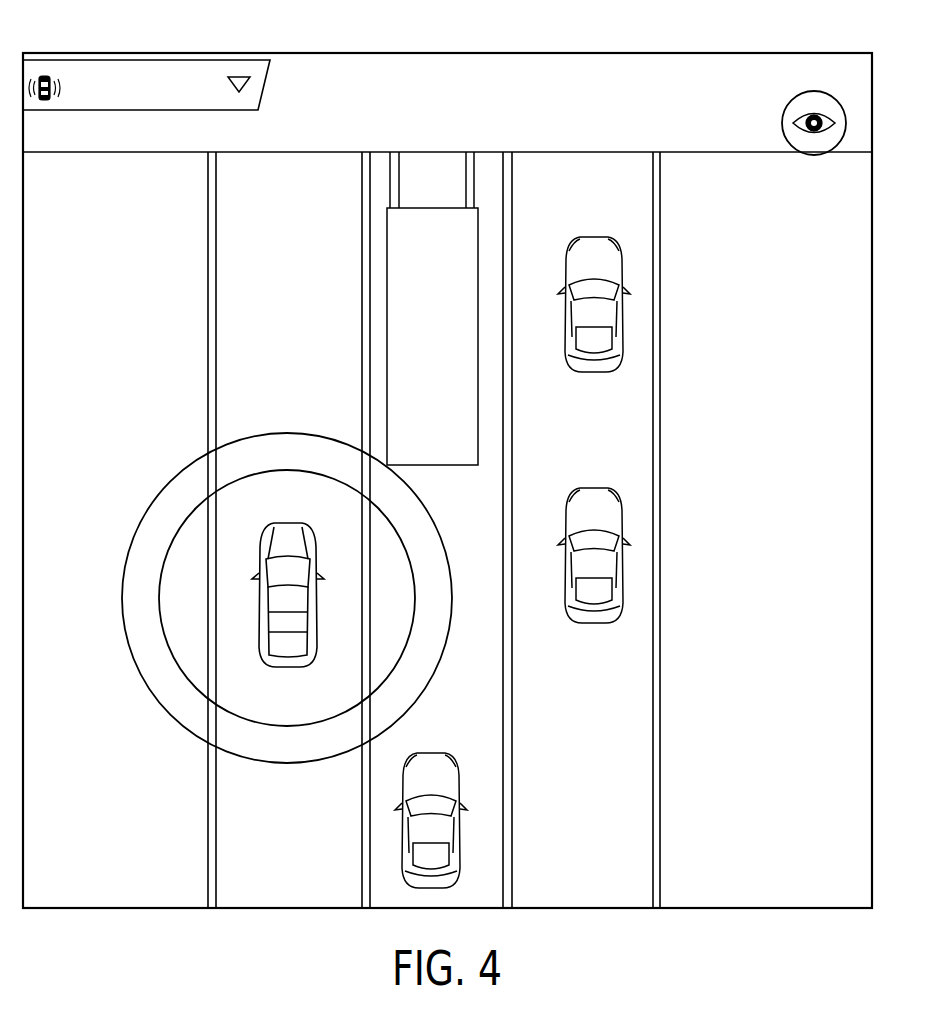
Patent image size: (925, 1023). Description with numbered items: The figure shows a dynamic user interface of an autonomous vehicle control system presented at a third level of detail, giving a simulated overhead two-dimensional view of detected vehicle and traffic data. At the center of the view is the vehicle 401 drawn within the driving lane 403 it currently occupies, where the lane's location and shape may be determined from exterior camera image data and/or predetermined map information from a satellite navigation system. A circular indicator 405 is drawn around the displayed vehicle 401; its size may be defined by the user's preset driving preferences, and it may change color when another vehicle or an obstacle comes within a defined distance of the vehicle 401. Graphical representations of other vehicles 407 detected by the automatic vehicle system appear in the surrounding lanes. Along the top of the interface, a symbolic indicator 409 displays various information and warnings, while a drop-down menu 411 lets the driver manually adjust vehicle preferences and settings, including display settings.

The vehicle 401 is at (262, 552).
The driving lane 403 is at (210, 315).
The circular indicator 405 is at (173, 480).
The other vehicles 407 is at (610, 270).
The symbolic indicator 409 is at (787, 137).
The drop-down menu 411 is at (217, 72).